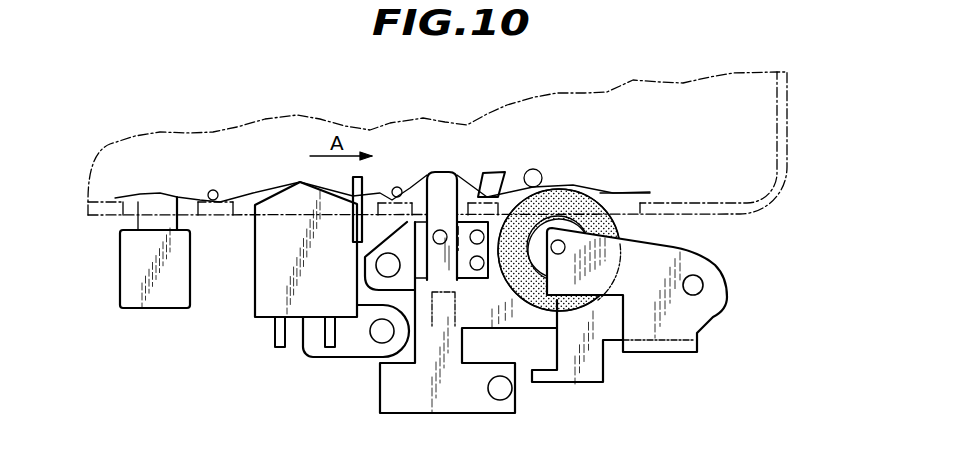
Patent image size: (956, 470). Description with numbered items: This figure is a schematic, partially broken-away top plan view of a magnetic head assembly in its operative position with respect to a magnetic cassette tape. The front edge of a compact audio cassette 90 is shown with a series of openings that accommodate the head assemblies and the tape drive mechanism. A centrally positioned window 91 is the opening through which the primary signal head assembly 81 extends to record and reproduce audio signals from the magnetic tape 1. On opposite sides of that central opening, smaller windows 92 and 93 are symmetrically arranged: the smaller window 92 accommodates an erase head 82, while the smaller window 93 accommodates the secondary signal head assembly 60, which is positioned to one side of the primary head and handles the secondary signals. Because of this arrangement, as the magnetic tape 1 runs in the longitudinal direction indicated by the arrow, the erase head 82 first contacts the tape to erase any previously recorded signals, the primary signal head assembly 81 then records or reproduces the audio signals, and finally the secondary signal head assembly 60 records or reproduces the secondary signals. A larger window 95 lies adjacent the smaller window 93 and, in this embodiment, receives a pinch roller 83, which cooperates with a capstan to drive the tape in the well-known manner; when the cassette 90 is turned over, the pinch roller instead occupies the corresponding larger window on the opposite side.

The magnetic tape 1 is at (637, 193).
The secondary signal head assembly 60 is at (443, 187).
The primary signal head assembly 81 is at (268, 307).
The erase head 82 is at (140, 295).
The pinch roller 83 is at (567, 197).
The compact audio cassette 90 is at (782, 115).
The window 91 is at (242, 210).
The smaller window 92 is at (187, 203).
The smaller window 93 is at (418, 210).
The larger window 95 is at (623, 210).